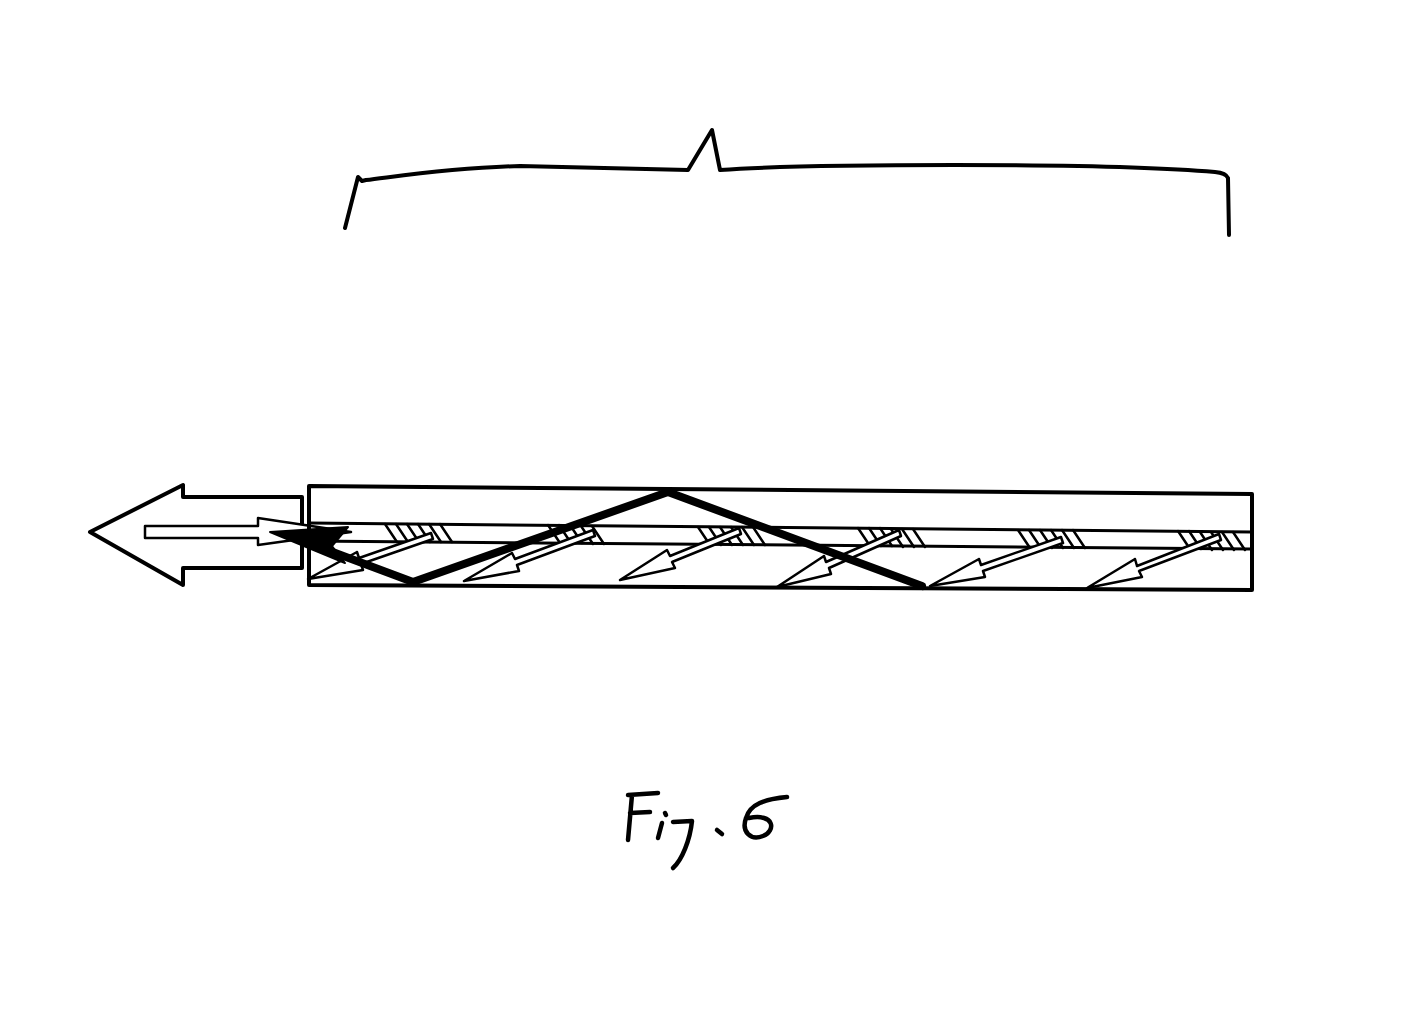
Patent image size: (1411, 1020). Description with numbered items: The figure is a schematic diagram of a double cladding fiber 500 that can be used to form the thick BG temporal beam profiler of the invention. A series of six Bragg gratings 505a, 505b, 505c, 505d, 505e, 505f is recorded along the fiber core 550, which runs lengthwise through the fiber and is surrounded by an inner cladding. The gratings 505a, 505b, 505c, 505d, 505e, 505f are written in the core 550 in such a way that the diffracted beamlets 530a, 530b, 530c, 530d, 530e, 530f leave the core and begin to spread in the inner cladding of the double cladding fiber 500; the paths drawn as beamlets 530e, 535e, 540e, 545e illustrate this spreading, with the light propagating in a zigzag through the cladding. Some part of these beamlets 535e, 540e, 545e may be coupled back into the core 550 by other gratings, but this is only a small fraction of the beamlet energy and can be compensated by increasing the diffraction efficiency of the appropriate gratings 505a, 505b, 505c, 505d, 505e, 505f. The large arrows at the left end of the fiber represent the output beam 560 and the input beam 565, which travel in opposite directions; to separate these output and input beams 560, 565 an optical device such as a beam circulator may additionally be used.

The double cladding fiber 500 is at (787, 132).
The Bragg grating 505a is at (420, 525).
The Bragg grating 505b is at (580, 528).
The Bragg grating 505c is at (760, 520).
The Bragg grating 505d is at (912, 528).
The Bragg grating 505e is at (1070, 528).
The Bragg grating 505f is at (1230, 520).
The diffracted beamlet 530a is at (335, 574).
The diffracted beamlet 530b is at (492, 587).
The diffracted beamlet 530c is at (642, 583).
The diffracted beamlet 530d is at (818, 583).
The diffracted beamlet 530e is at (972, 587).
The diffracted beamlet 530f is at (1113, 587).
The beamlet 535e is at (905, 590).
The beamlet 540e is at (550, 525).
The beamlet 545e is at (300, 583).
The fiber core 550 is at (1258, 527).
The output beam 560 is at (134, 492).
The input beam 565 is at (213, 523).